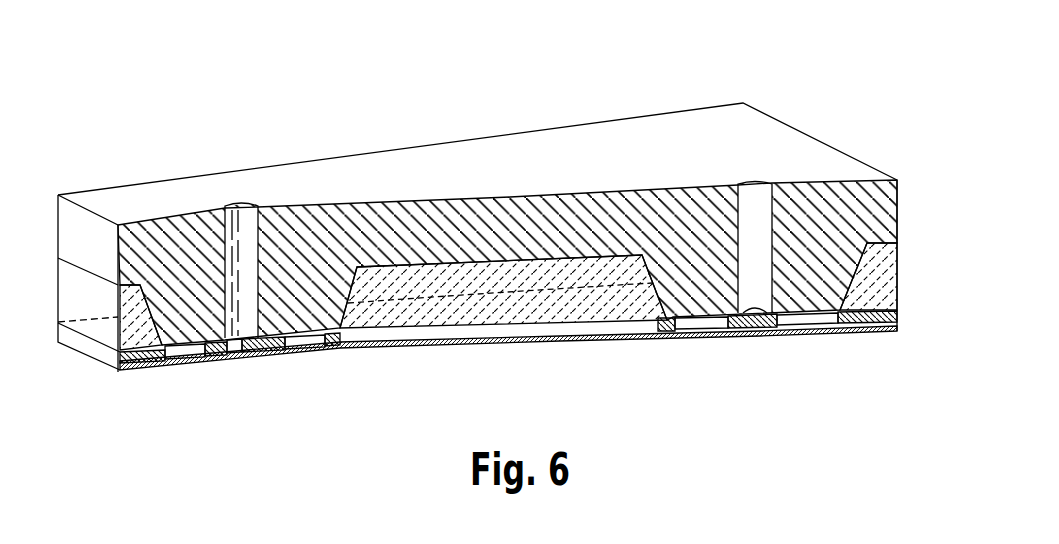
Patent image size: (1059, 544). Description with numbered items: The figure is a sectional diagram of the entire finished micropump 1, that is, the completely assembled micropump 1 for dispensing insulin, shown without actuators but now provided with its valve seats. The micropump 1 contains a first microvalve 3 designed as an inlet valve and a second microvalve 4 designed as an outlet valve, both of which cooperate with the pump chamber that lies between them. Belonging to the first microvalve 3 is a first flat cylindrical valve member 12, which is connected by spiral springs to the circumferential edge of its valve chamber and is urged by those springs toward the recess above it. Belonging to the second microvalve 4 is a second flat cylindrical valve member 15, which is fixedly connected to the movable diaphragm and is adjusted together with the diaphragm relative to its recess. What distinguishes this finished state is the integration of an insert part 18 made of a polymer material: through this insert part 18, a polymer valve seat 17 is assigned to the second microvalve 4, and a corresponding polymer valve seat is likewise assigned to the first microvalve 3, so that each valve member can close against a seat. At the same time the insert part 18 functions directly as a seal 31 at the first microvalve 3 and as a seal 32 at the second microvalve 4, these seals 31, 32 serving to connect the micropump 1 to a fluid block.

The micropump 1 is at (806, 89).
The first microvalve 3 is at (250, 378).
The second microvalve 4 is at (765, 358).
The first flat cylindrical valve member 12 is at (227, 357).
The second flat cylindrical valve member 15 is at (748, 334).
The valve seat 17 is at (270, 353).
The insert part 18 is at (485, 171).
The seal 31 is at (240, 204).
The seal 32 is at (753, 183).